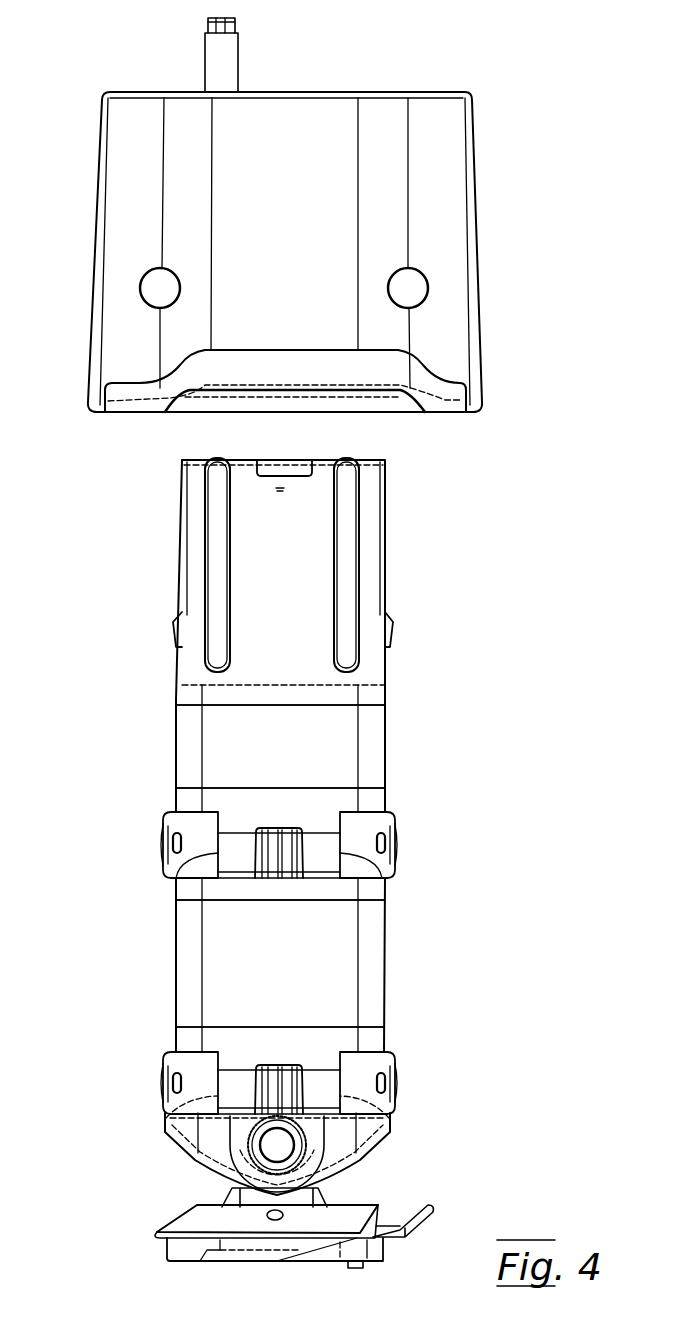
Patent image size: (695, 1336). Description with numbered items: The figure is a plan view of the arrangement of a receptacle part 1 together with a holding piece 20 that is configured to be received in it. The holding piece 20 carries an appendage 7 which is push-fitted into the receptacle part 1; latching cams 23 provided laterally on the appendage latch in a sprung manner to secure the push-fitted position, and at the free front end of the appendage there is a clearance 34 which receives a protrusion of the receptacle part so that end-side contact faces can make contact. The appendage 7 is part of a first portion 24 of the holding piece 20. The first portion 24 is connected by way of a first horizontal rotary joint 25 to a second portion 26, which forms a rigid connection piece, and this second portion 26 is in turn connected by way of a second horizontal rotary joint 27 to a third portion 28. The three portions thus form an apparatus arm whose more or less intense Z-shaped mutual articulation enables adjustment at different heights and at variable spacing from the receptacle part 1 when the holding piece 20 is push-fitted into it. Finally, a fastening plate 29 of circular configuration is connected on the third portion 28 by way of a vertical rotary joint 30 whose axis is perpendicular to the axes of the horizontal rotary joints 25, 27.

The receptacle part 1 is at (538, 254).
The appendage 7 is at (383, 553).
The holding piece 20 is at (527, 990).
The latching cams 23 is at (170, 635).
The first portion 24 is at (388, 737).
The first horizontal rotary joint 25 is at (398, 843).
The second portion 26 is at (370, 948).
The second horizontal rotary joint 27 is at (402, 1082).
The third portion 28 is at (343, 1148).
The fastening plate 29 is at (388, 1253).
The vertical rotary joint 30 is at (277, 1145).
The clearance 34 is at (267, 465).